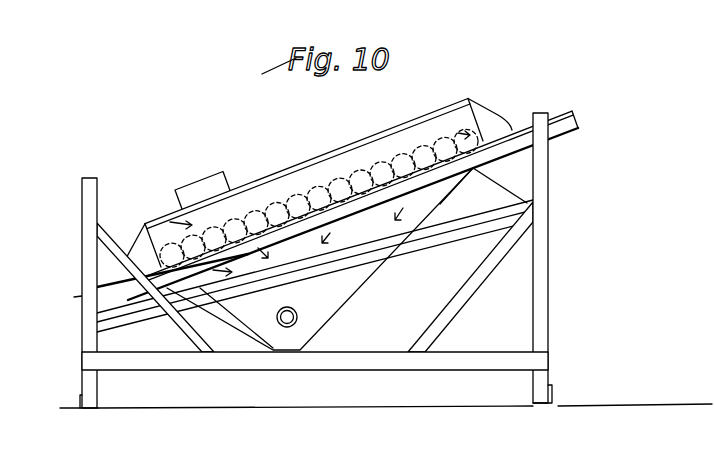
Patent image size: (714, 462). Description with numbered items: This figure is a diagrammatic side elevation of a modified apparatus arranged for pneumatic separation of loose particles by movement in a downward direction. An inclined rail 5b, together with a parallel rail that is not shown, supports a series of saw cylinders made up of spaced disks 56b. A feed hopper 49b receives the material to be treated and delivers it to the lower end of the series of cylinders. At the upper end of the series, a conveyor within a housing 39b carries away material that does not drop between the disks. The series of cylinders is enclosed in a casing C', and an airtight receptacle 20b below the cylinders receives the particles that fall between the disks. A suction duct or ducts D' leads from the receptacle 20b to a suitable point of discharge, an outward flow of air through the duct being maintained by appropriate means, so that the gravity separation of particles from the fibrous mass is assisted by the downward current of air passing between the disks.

The feed hopper 49b is at (207, 188).
The spaced disks 56b is at (323, 186).
The casing C' is at (496, 96).
The inclined rail 5b is at (563, 122).
The housing 39b is at (511, 177).
The suction duct D' is at (311, 300).
The airtight receptacle 20b is at (345, 293).